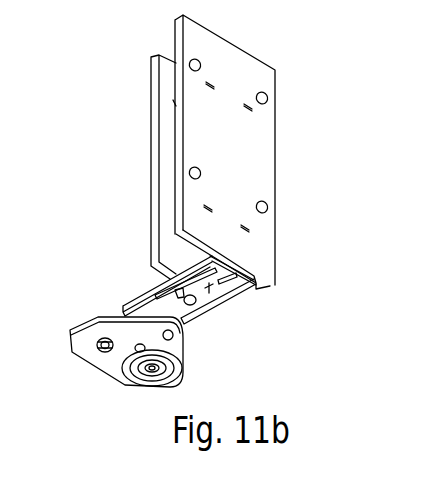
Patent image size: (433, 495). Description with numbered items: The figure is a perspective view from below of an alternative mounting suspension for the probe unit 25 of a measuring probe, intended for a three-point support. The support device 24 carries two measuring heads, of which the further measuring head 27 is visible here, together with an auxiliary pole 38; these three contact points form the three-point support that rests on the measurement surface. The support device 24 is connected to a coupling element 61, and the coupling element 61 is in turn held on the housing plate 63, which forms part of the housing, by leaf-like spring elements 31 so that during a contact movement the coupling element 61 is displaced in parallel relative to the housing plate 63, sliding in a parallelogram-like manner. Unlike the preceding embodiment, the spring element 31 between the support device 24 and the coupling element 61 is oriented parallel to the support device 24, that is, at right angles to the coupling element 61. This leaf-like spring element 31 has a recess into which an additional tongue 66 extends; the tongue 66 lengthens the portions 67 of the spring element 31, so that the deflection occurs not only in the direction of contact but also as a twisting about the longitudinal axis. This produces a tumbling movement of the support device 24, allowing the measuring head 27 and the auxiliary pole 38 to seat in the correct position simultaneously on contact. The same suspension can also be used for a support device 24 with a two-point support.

The support device 24 is at (78, 354).
The probe unit 25 is at (104, 366).
The further measuring head 27 is at (129, 398).
The spring element 31 is at (168, 106).
The auxiliary pole 38 is at (173, 340).
The coupling element 61 is at (158, 138).
The housing plate 63 is at (255, 171).
The tongue 66 is at (236, 292).
The portions of the spring element 67 is at (142, 294).